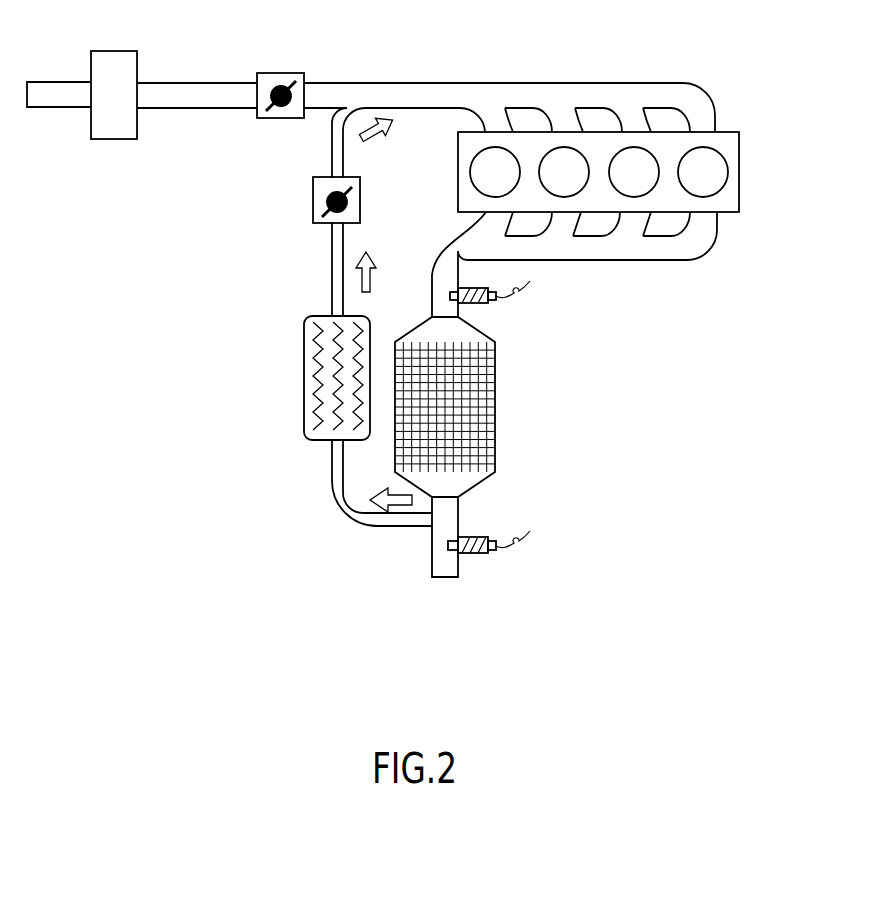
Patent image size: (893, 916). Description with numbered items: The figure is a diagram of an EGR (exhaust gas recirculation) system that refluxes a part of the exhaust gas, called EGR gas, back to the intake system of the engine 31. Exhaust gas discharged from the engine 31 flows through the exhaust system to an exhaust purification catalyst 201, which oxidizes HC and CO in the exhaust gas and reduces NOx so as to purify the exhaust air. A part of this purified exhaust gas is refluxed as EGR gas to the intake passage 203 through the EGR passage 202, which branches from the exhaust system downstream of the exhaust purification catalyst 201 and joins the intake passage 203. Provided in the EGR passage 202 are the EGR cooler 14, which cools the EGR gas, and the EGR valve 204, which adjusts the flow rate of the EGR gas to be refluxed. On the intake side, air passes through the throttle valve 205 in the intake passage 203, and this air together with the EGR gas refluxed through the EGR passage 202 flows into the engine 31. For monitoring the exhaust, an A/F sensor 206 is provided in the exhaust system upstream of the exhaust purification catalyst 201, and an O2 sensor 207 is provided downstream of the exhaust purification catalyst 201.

The EGR cooler 14 is at (304, 376).
The engine 31 is at (740, 167).
The exhaust purification catalyst 201 is at (497, 410).
The EGR passage 202 is at (340, 489).
The intake passage 203 is at (548, 83).
The EGR valve 204 is at (313, 200).
The throttle valve 205 is at (284, 72).
The A/F sensor 206 is at (490, 303).
The O2 sensor 207 is at (478, 553).